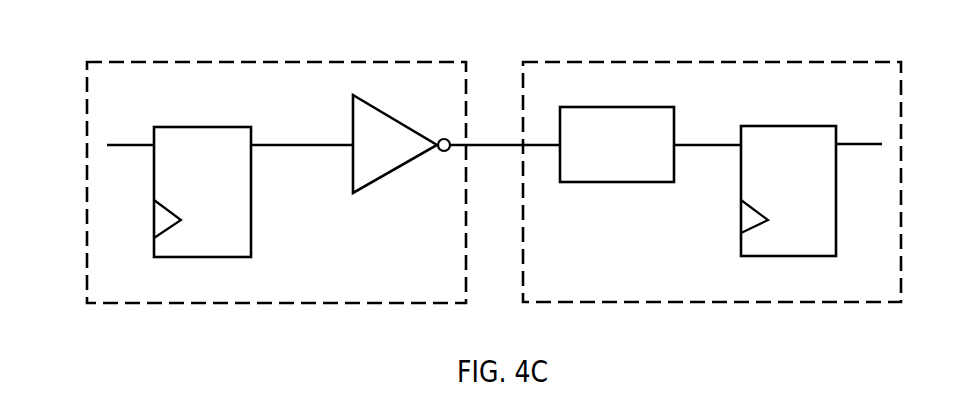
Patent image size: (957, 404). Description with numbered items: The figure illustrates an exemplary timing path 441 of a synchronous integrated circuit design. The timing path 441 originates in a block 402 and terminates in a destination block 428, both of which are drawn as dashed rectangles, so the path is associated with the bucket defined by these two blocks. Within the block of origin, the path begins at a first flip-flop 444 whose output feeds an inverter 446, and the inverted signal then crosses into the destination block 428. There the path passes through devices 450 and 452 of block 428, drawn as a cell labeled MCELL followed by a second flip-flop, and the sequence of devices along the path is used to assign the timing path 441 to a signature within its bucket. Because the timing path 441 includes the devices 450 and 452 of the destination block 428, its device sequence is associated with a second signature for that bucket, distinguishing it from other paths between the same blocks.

The timing path 441 is at (463, 160).
The block 402 is at (276, 165).
The destination block 428 is at (712, 164).
The first flip-flop 444 is at (185, 175).
The inverter 446 is at (361, 144).
The device 450 is at (614, 159).
The device 452 is at (776, 174).